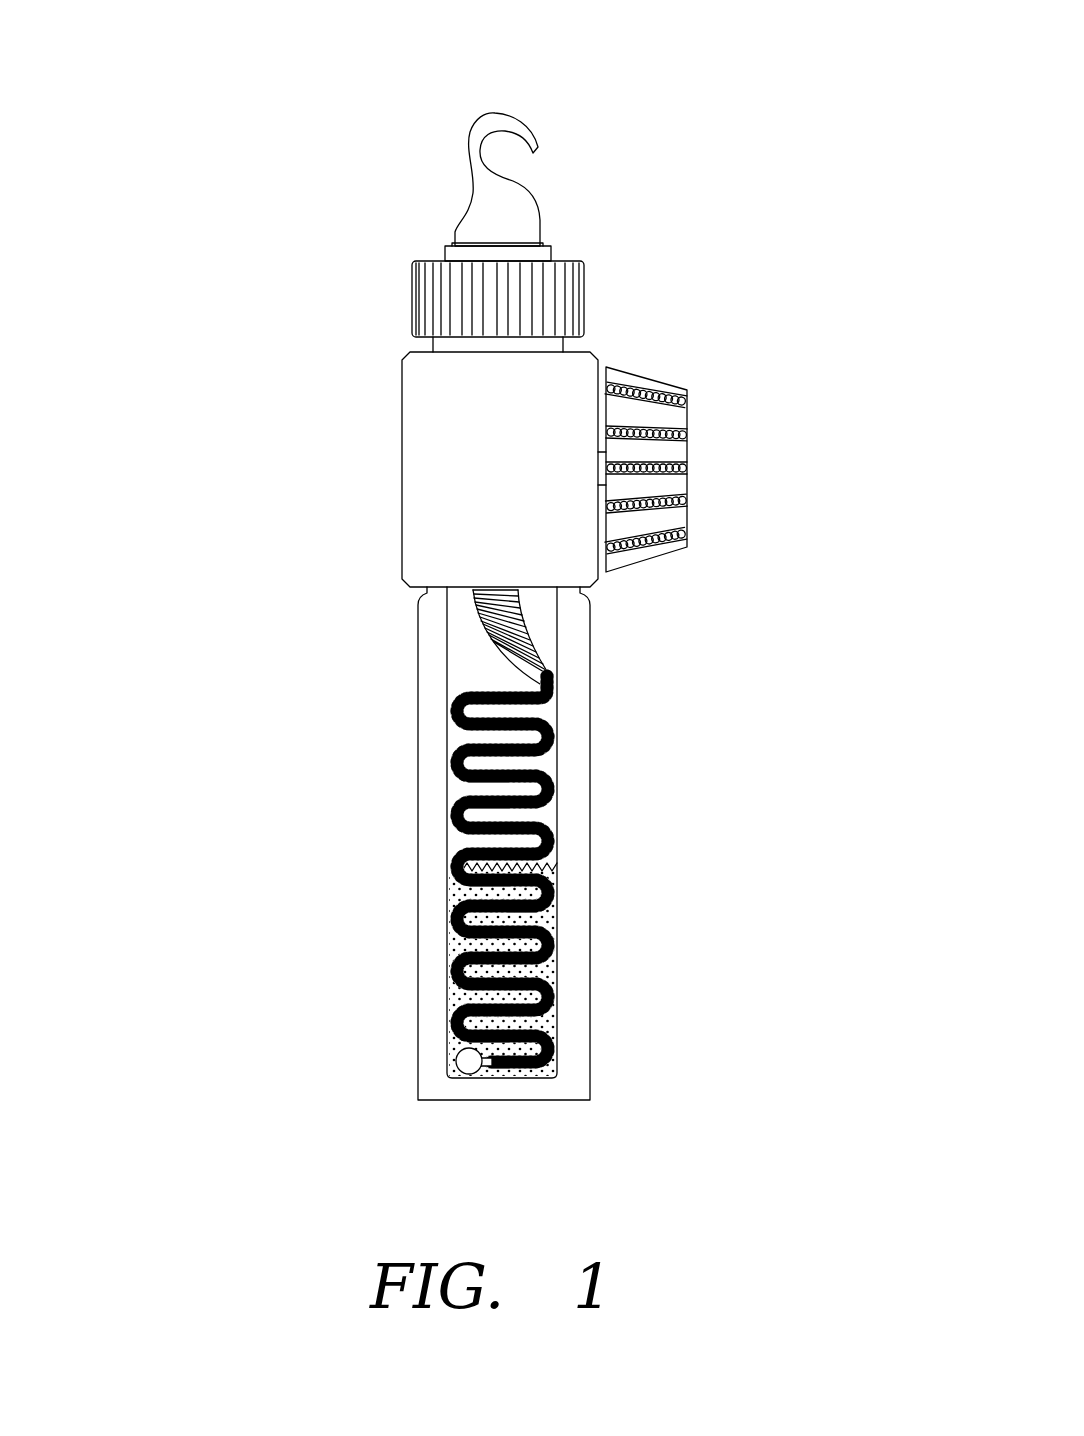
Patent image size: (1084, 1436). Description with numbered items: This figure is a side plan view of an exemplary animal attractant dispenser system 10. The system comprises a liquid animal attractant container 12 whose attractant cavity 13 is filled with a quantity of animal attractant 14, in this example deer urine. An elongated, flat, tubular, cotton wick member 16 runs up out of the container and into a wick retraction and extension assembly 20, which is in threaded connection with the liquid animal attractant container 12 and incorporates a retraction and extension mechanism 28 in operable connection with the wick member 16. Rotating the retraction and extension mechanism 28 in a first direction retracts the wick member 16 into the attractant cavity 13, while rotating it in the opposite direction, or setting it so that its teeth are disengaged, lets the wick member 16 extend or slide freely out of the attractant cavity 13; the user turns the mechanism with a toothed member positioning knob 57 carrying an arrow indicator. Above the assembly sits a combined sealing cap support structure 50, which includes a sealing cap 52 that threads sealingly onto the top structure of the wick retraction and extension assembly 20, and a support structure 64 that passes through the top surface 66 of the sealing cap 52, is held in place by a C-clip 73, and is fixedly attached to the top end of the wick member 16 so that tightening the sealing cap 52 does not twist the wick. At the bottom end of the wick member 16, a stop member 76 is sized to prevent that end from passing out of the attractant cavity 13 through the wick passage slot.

The animal attractant dispenser system 10 is at (196, 128).
The liquid animal attractant container 12 is at (400, 783).
The attractant cavity 13 is at (467, 667).
The animal attractant 14 is at (482, 923).
The wick member 16 is at (523, 655).
The wick retraction and extension assembly 20 is at (378, 465).
The retraction and extension mechanism 28 is at (711, 490).
The combined sealing cap support structure 50 is at (376, 298).
The sealing cap 52 is at (585, 300).
The toothed member positioning knob 57 is at (637, 372).
The support structure 64 is at (518, 132).
The top surface 66 is at (432, 243).
The C-clip 73 is at (555, 240).
The stop member 76 is at (468, 1063).